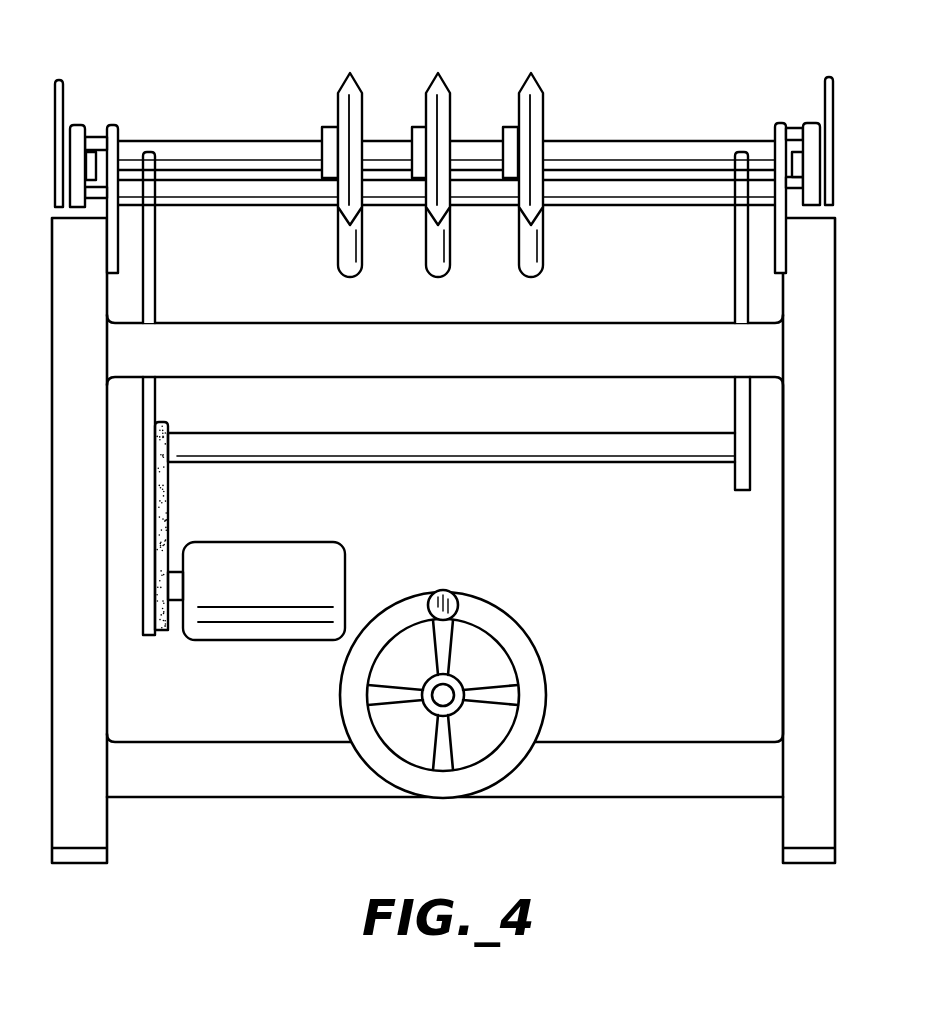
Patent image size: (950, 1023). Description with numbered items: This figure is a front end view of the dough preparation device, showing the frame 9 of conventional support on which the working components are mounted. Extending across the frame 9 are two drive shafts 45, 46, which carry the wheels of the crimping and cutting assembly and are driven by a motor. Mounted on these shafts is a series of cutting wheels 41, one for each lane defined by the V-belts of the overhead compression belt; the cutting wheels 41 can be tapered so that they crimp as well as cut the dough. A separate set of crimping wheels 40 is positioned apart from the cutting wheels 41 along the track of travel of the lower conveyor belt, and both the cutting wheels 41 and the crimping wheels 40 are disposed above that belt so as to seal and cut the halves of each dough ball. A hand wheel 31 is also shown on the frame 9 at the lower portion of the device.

The frame 9 is at (825, 393).
The hand wheel 31 is at (540, 686).
The crimping wheels 40 is at (352, 278).
The cutting wheels 41 is at (358, 93).
The drive shaft 45 is at (220, 193).
The drive shaft 46 is at (190, 146).